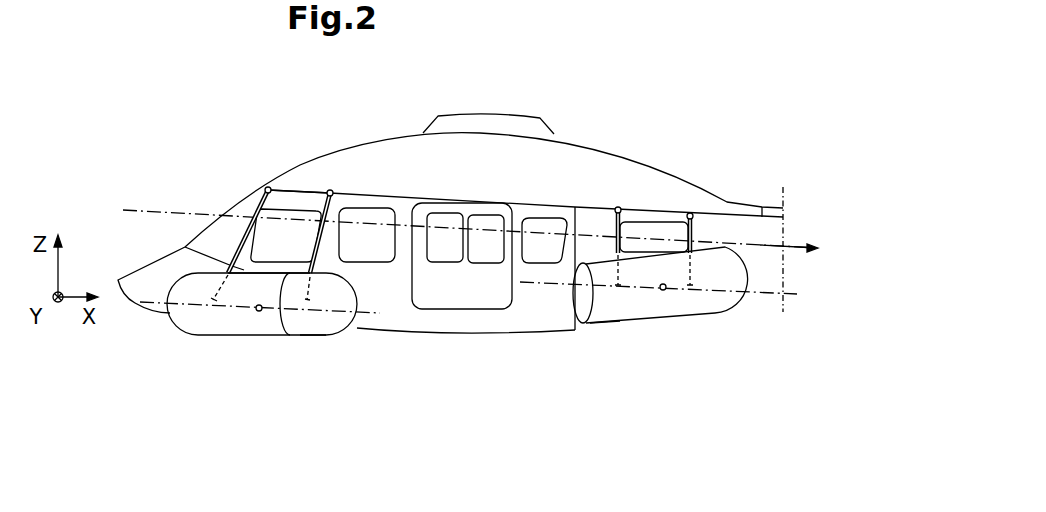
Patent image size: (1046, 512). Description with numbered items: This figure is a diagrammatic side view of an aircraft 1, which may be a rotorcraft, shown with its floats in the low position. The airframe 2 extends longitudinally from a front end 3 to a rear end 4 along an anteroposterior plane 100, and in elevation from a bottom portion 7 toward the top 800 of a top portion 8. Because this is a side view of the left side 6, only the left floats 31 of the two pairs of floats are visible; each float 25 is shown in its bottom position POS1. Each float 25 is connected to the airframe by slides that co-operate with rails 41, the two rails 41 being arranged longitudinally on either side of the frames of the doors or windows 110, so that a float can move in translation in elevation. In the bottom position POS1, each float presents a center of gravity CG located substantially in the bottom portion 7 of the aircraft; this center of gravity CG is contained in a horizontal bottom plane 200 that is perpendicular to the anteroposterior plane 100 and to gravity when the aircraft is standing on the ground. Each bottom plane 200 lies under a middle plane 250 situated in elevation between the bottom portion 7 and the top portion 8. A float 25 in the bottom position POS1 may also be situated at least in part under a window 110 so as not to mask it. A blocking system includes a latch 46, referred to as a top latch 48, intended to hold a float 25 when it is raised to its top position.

The aircraft 1 is at (232, 388).
The airframe 2 is at (495, 184).
The front end 3 is at (116, 279).
The rear end 4 is at (801, 249).
The left side 6 is at (406, 316).
The bottom portion 7 is at (448, 335).
The top portion 8 is at (485, 106).
The top 800 is at (507, 118).
The rail 41 is at (266, 190).
The latch 46 is at (459, 188).
The top latch 48 is at (330, 190).
The anteroposterior plane 100 is at (289, 305).
The window 110 is at (297, 252).
The bottom plane 200 is at (235, 309).
The middle plane 250 is at (148, 210).
The float 25 is at (462, 394).
The left float 31 is at (462, 394).
The bottom position POS1 is at (316, 334).
The center of gravity CG is at (259, 312).